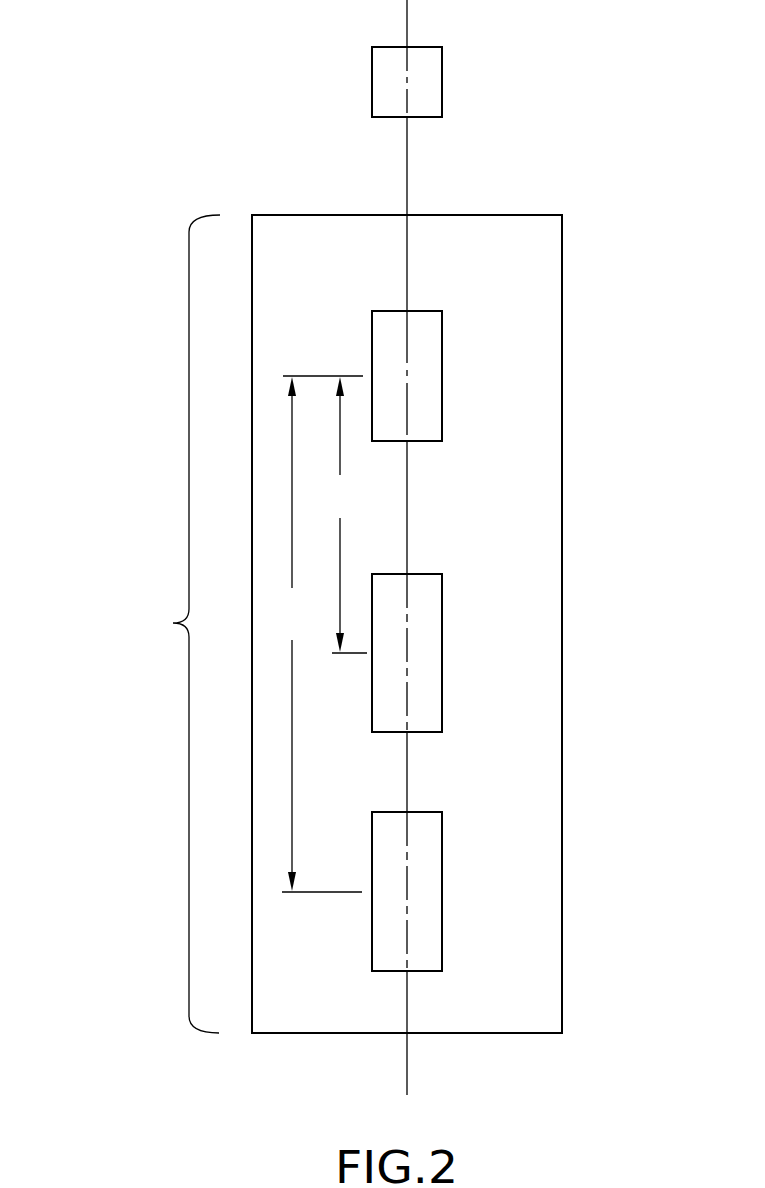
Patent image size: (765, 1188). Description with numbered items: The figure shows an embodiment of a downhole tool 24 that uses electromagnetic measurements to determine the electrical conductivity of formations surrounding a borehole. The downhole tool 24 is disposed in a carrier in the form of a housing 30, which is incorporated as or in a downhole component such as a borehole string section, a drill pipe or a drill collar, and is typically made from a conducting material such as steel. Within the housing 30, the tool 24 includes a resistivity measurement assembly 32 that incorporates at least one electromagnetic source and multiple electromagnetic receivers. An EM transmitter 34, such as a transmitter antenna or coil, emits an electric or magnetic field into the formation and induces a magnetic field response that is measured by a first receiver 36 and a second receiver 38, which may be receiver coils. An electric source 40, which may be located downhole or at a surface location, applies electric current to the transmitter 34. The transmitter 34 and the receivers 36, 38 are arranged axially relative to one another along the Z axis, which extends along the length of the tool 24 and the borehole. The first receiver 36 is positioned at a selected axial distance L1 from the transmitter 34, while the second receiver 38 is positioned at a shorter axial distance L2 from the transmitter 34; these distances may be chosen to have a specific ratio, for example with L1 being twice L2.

The downhole tool 24 is at (124, 182).
The housing 30 is at (562, 275).
The resistivity measurement assembly 32 is at (174, 623).
The EM transmitter 34 is at (442, 376).
The first receiver 36 is at (442, 838).
The second receiver 38 is at (442, 653).
The electric source 40 is at (442, 82).
The Z axis Z is at (407, 892).
The first axial distance L1 is at (320, 634).
The second axial distance L2 is at (346, 515).